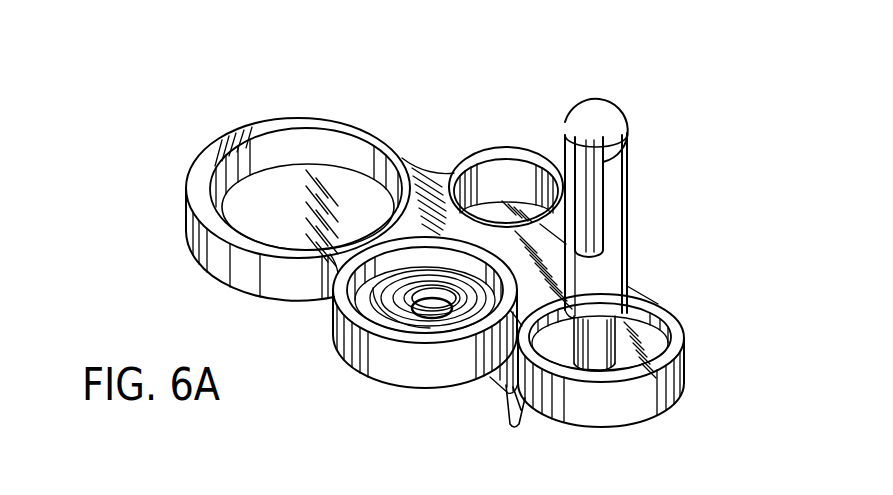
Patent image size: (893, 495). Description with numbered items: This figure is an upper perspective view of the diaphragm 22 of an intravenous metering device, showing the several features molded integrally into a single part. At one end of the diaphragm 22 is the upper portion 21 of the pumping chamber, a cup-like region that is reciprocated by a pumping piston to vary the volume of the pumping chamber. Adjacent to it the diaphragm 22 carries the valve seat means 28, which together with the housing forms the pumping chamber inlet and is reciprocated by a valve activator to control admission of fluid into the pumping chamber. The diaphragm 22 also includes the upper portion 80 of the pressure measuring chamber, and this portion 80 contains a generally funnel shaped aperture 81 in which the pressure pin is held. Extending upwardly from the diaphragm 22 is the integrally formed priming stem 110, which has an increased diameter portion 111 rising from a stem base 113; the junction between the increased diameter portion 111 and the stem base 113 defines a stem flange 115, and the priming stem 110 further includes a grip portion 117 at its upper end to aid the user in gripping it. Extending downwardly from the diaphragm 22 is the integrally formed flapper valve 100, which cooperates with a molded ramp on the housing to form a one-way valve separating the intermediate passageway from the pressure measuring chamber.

The upper portion of pumping chamber 21 is at (293, 193).
The diaphragm 22 is at (447, 172).
The valve seat means 28 is at (520, 205).
The upper portion of pressure measuring chamber 80 is at (405, 322).
The funnel shaped aperture 81 is at (436, 306).
The flapper valve 100 is at (518, 402).
The priming stem 110 is at (608, 108).
The increased diameter portion 111 is at (615, 210).
The stem base 113 is at (617, 318).
The stem flange 115 is at (628, 302).
The grip portion 117 is at (627, 137).